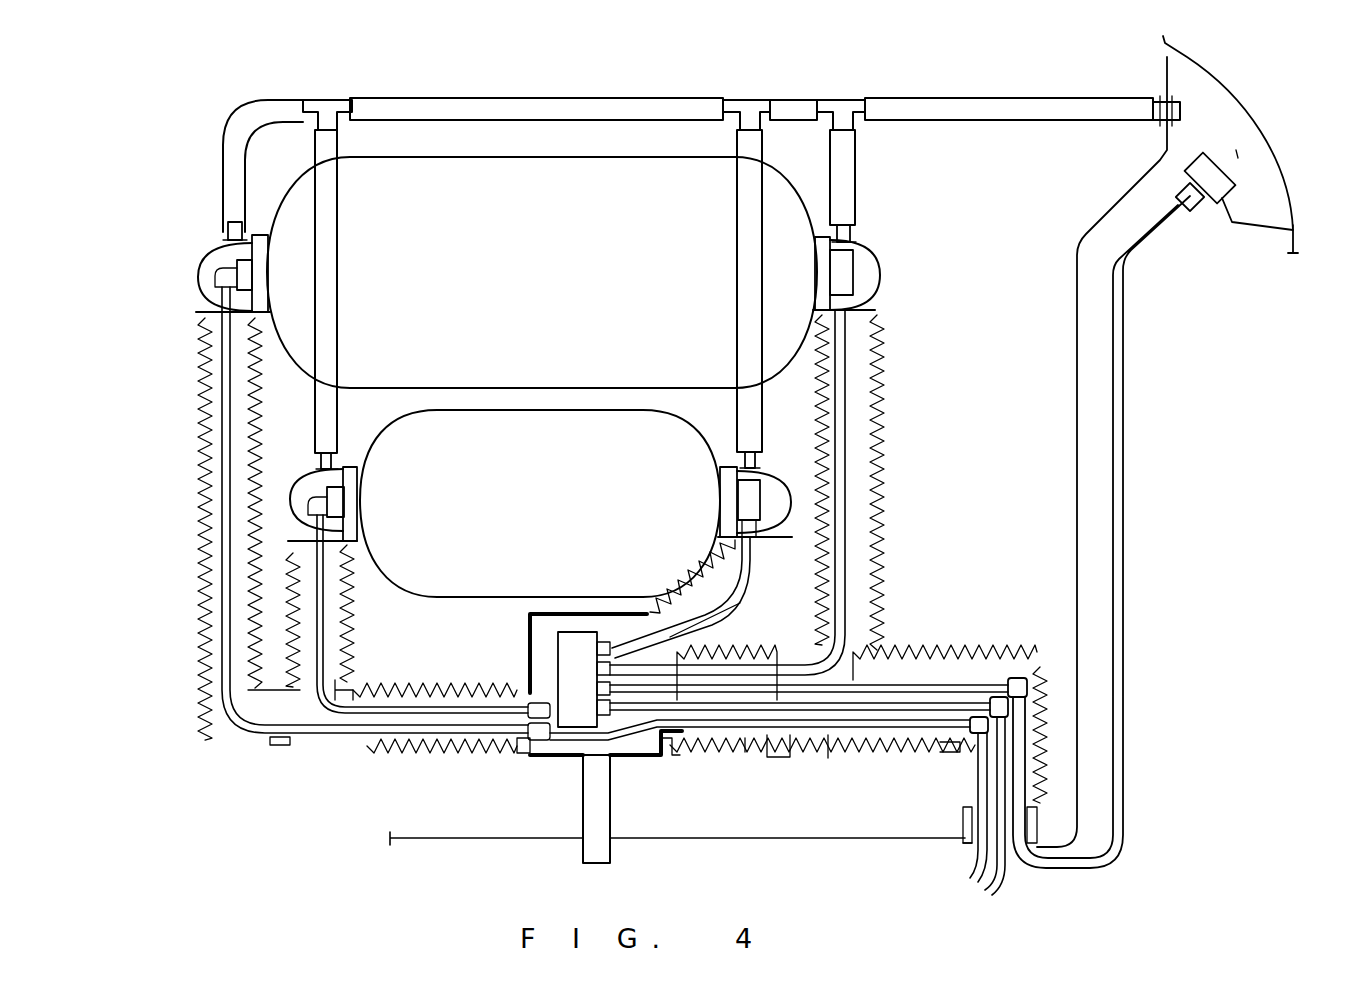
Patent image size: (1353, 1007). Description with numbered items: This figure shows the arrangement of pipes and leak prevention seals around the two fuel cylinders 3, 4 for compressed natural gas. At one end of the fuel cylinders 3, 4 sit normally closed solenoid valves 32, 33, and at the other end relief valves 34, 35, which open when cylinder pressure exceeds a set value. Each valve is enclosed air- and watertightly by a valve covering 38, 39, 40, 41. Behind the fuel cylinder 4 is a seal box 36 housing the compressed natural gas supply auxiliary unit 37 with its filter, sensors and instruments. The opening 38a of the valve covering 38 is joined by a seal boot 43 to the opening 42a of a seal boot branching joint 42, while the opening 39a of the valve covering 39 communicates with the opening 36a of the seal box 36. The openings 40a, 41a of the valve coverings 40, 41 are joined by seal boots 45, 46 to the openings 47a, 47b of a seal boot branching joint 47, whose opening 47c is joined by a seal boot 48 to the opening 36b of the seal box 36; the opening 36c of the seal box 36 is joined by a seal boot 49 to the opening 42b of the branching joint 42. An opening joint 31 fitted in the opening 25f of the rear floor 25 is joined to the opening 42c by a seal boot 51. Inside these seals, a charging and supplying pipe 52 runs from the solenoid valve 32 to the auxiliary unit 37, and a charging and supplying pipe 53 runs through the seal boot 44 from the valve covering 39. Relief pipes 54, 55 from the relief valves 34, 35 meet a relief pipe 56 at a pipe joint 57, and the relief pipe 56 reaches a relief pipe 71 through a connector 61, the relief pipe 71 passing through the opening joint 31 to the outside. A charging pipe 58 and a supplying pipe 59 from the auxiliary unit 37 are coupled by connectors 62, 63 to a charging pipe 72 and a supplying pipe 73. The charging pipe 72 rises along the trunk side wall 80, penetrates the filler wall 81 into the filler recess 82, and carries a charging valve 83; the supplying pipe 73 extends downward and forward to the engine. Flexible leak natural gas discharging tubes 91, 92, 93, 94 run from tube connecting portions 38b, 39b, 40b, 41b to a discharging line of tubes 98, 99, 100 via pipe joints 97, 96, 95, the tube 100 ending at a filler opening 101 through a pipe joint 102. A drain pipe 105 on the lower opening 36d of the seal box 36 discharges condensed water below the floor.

The fuel cylinder 3 is at (525, 157).
The fuel cylinder 4 is at (462, 597).
The rear floor 25 is at (853, 838).
The opening 25f is at (962, 835).
The opening joint 31 is at (1040, 790).
The normally closed solenoid valve 32 is at (855, 268).
The normally closed solenoid valve 33 is at (752, 475).
The relief valve 34 is at (240, 272).
The relief valve 35 is at (320, 484).
The seal box 36 is at (552, 760).
The opening of the seal box 36a is at (790, 645).
The opening of the seal box 36b is at (520, 742).
The opening of the seal box 36c is at (755, 748).
The lower opening of the seal box 36d is at (600, 768).
The compressed natural gas supply auxiliary unit 37 is at (560, 645).
The valve covering 38 is at (880, 272).
The opening of the valve covering 38a is at (865, 312).
The tube connecting portion 38b is at (850, 232).
The valve covering 39 is at (790, 495).
The opening of the valve covering 39a is at (775, 548).
The tube connecting portion 39b is at (745, 460).
The valve covering 40 is at (205, 262).
The opening of the valve covering 40a is at (205, 316).
The tube connecting portion 40b is at (240, 222).
The valve covering 41 is at (295, 505).
The opening of the valve covering 41a is at (333, 548).
The tube connecting portion 41b is at (332, 458).
The seal boot branching joint 42 is at (828, 750).
The opening of the seal boot branching joint 42a is at (858, 640).
The opening of the seal boot branching joint 42b is at (775, 752).
The opening of the seal boot branching joint 42c is at (932, 635).
The seal boot 43 is at (882, 445).
The seal boot 44 is at (755, 598).
The seal boot 45 is at (205, 548).
The seal boot 46 is at (350, 635).
The seal boot branching joint 47 is at (320, 742).
The opening of the seal boot branching joint 47a is at (280, 745).
The opening of the seal boot branching joint 47b is at (420, 673).
The opening of the seal boot branching joint 47c is at (370, 750).
The seal boot 48 is at (418, 752).
The seal boot 49 is at (745, 752).
The seal boot 51 is at (988, 722).
The compressed natural gas charging and supplying pipe 52 is at (850, 490).
The compressed natural gas charging and supplying pipe 53 is at (760, 638).
The relief pipe 54 is at (222, 565).
The relief pipe 55 is at (274, 504).
The relief pipe 56 is at (665, 748).
The pipe joint 57 is at (486, 824).
The compressed natural gas charging pipe 58 is at (900, 685).
The compressed natural gas supplying pipe 59 is at (935, 702).
The connector 61 is at (945, 748).
The connector 62 is at (1022, 678).
The connector 63 is at (1010, 712).
The relief pipe 71 is at (965, 845).
The compressed natural gas charging pipe 72 is at (1125, 602).
The compressed natural gas supplying pipe 73 is at (990, 885).
The trunk side wall 80 is at (1077, 472).
The filler wall 81 is at (1228, 230).
The filler recess 82 is at (1280, 199).
The compressed natural gas charging valve 83 is at (1225, 165).
The leak natural gas discharging tube 91 is at (856, 168).
The leak natural gas discharging tube 92 is at (760, 200).
The leak natural gas discharging tube 93 is at (223, 160).
The leak natural gas discharging tube 94 is at (316, 150).
The pipe joint 95 is at (855, 100).
The pipe joint 96 is at (748, 98).
The pipe joint 97 is at (327, 98).
The leak natural gas discharging tube 98 is at (545, 98).
The leak natural gas discharging tube 99 is at (795, 100).
The leak natural gas discharging tube 100 is at (1028, 98).
The filler opening 101 is at (1160, 100).
The pipe joint 102 is at (1178, 128).
The drain pipe 105 is at (612, 830).